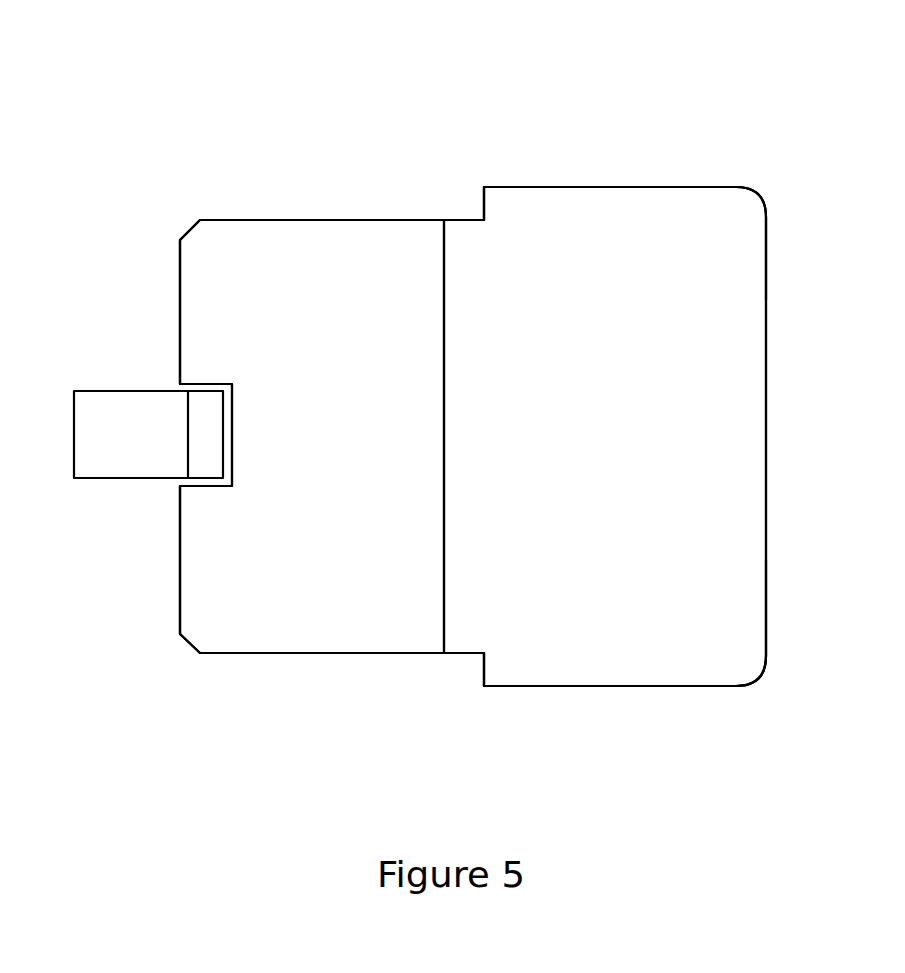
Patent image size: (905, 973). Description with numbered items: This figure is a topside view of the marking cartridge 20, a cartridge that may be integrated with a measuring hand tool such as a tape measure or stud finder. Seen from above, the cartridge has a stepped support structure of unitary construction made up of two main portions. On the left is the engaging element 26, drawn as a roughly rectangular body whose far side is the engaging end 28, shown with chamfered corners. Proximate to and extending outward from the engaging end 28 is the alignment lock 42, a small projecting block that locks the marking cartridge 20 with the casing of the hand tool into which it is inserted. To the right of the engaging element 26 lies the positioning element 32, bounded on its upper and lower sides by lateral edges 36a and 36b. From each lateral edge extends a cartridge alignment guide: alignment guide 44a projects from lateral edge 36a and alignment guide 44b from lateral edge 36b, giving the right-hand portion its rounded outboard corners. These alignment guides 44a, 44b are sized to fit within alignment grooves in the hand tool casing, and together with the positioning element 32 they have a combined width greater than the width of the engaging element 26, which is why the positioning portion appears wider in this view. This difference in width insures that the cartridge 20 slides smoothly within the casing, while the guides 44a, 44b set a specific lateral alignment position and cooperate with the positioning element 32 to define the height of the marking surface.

The marking cartridge 20 is at (457, 126).
The engaging element 26 is at (347, 453).
The engaging end 28 is at (180, 283).
The positioning element 32 is at (627, 453).
The lateral edge 36a is at (515, 187).
The lateral edge 36b is at (510, 688).
The alignment lock 42 is at (118, 420).
The cartridge alignment guide 44a is at (627, 207).
The cartridge alignment guide 44b is at (638, 668).